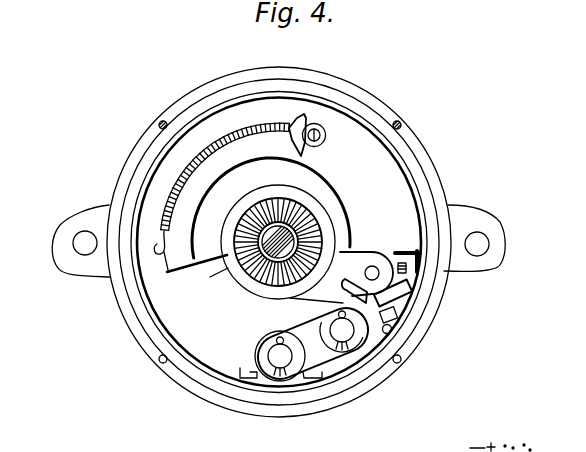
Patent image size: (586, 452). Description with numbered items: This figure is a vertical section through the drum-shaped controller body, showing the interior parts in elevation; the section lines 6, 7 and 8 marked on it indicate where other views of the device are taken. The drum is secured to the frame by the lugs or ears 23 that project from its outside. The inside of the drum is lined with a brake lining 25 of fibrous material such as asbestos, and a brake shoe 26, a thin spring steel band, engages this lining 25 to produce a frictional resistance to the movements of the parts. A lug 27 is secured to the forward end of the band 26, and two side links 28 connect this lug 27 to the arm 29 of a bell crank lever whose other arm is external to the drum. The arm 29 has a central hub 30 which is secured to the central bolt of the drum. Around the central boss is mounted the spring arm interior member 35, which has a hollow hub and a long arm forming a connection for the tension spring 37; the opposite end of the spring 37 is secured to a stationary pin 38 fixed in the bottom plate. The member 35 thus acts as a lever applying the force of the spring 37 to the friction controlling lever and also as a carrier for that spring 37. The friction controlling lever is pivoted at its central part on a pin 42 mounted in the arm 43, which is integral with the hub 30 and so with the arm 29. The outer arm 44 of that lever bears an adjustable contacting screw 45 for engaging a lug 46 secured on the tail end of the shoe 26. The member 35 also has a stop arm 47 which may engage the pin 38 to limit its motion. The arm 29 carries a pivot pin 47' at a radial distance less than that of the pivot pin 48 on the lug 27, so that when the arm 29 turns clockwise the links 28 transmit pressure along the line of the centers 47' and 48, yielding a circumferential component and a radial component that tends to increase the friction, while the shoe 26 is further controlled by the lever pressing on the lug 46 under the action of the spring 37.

The section line 6- 6 is at (117, 185).
The section line 7- 7 is at (378, 332).
The section line 8- 8 is at (248, 351).
The lugs or ears 23 is at (75, 258).
The brake lining 25 is at (163, 341).
The brake shoe 26 is at (197, 361).
The lug 27 is at (264, 378).
The side links 28 is at (308, 360).
The arm 29 is at (290, 298).
The central hub 30 is at (225, 275).
The spring arm interior member 35 is at (193, 250).
The tension spring 37 is at (197, 167).
The stationary pin 38 is at (325, 133).
The pin 42 is at (376, 276).
The arm 43 is at (352, 243).
The outer arm 44 is at (403, 284).
The adjustable contacting screw 45 is at (398, 324).
The lug 46 is at (415, 248).
The stop arm 47 is at (354, 103).
The pivot pin 47' is at (384, 348).
The pivot pin 48 is at (280, 362).